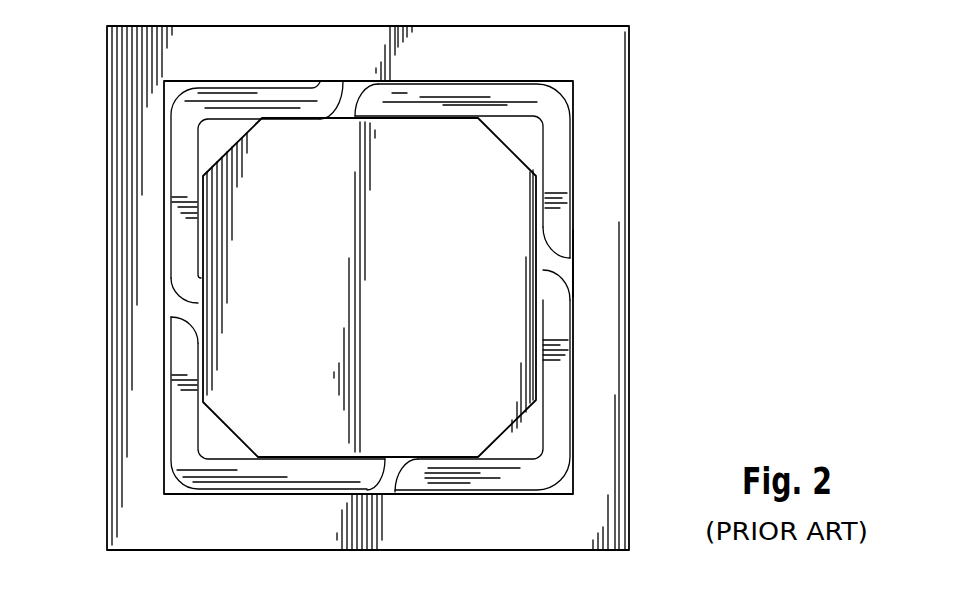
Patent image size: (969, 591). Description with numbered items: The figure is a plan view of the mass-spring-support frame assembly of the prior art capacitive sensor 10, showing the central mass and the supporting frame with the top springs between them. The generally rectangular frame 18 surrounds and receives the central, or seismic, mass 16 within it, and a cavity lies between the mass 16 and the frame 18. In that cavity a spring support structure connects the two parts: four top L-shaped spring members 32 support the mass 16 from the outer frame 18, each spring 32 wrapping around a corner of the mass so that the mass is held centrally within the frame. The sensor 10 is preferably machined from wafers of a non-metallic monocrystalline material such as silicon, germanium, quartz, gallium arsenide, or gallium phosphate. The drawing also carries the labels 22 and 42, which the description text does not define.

The capacitive sensor 10 is at (397, 288).
The central mass 16 is at (500, 383).
The frame 18 is at (607, 308).
The die center line 22 is at (461, 262).
The top L-shaped spring members 32 is at (183, 130).
The gap between leads 42 is at (573, 247).